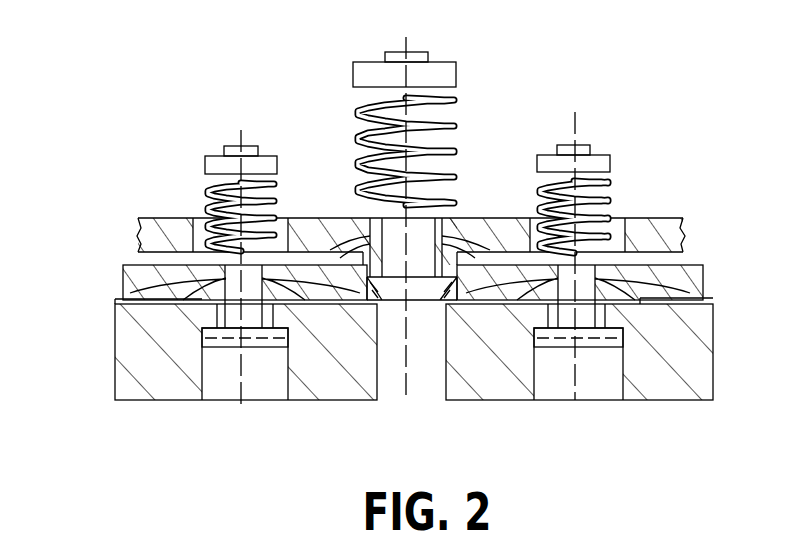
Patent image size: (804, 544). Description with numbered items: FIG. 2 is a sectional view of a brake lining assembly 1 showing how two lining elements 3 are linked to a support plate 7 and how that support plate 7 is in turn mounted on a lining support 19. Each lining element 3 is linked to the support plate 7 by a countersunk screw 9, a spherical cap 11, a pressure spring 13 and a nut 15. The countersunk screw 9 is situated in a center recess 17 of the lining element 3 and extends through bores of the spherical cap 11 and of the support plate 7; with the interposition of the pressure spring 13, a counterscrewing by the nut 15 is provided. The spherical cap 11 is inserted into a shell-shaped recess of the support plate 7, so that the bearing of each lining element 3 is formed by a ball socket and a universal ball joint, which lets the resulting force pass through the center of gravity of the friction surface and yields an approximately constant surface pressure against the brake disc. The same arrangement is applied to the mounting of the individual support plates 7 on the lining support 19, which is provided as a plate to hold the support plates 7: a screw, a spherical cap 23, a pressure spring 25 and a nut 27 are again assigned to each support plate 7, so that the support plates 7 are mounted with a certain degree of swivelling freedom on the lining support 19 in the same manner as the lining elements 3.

The clamping fixture 1 is at (97, 394).
The lining element 3 is at (352, 383).
The support plate 7 is at (128, 278).
The countersunk screw 9 is at (230, 340).
The spherical cap 11 is at (130, 293).
The pressure spring 13 is at (212, 203).
The nut 15 is at (210, 167).
The center recess 17 is at (267, 388).
The lining support 19 is at (665, 234).
The spherical cap 23 is at (470, 228).
The pressure spring 25 is at (445, 120).
The nut 27 is at (450, 73).